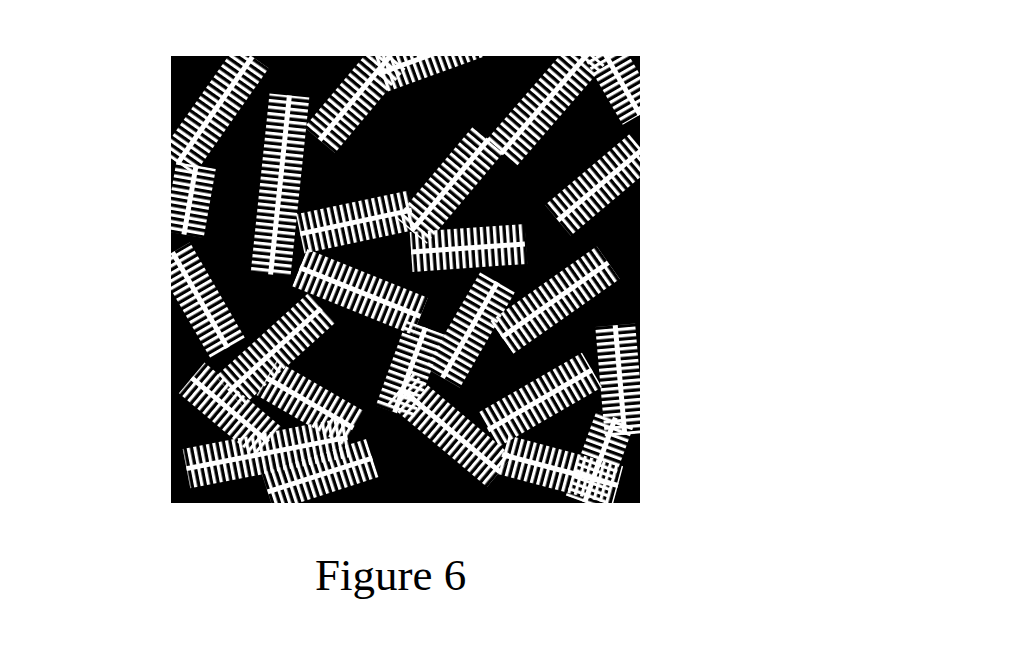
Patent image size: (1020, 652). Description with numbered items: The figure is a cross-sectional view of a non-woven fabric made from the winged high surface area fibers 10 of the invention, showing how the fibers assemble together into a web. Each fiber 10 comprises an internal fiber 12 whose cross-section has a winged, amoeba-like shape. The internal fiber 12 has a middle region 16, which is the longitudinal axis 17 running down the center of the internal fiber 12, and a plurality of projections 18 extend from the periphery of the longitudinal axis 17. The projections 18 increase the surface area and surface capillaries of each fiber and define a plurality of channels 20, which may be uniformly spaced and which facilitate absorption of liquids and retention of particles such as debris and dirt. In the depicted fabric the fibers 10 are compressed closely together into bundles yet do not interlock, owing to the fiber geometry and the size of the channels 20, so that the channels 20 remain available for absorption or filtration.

The high surface area fiber 10 is at (637, 273).
The internal fiber 12 is at (638, 441).
The middle region 16 is at (627, 104).
The longitudinal axis 17 is at (205, 190).
The projections 18 is at (178, 284).
The channels 20 is at (180, 463).